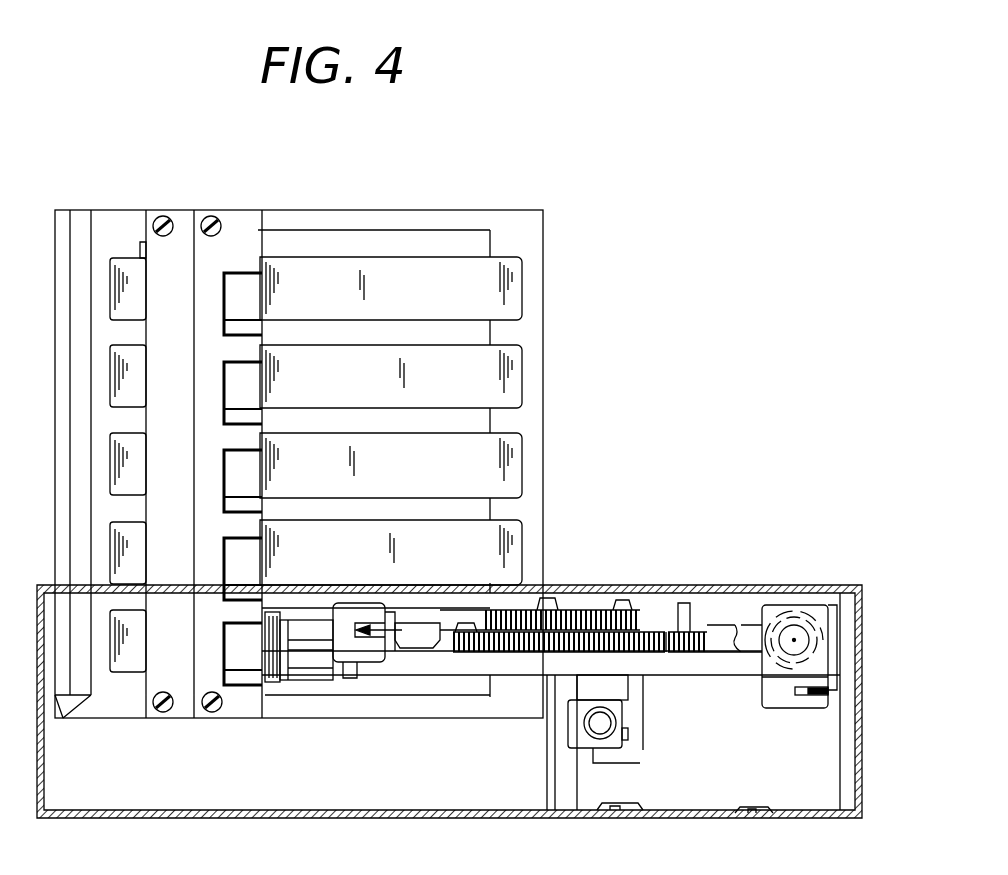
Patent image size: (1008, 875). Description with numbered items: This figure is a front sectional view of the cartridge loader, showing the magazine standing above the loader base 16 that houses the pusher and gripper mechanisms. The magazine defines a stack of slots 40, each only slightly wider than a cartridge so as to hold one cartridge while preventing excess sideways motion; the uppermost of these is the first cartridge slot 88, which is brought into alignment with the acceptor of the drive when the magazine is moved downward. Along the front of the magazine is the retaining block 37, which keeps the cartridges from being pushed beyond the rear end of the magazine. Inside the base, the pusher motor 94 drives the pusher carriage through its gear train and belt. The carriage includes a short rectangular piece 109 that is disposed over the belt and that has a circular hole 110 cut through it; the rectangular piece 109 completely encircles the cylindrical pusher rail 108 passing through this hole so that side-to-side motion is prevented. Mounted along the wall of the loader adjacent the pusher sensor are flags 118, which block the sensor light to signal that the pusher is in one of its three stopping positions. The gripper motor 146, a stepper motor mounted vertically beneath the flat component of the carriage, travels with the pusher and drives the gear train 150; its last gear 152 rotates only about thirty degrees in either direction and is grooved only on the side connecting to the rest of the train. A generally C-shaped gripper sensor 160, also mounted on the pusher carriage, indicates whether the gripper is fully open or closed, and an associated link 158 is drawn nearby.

The base housing 16 is at (775, 700).
The retaining block 37 is at (217, 201).
The slots 40 is at (520, 372).
The first cartridge slot 88 is at (522, 293).
The pusher motor 94 is at (723, 722).
The pusher rail 108 is at (810, 627).
The rectangular piece 109 is at (783, 605).
The circular hole 110 is at (817, 645).
The flags 118 is at (830, 690).
The gripper motor 146 is at (640, 763).
The gear train 150 is at (594, 607).
The last gear 152 is at (420, 636).
The link 158 is at (393, 637).
The gripper sensor 160 is at (367, 663).